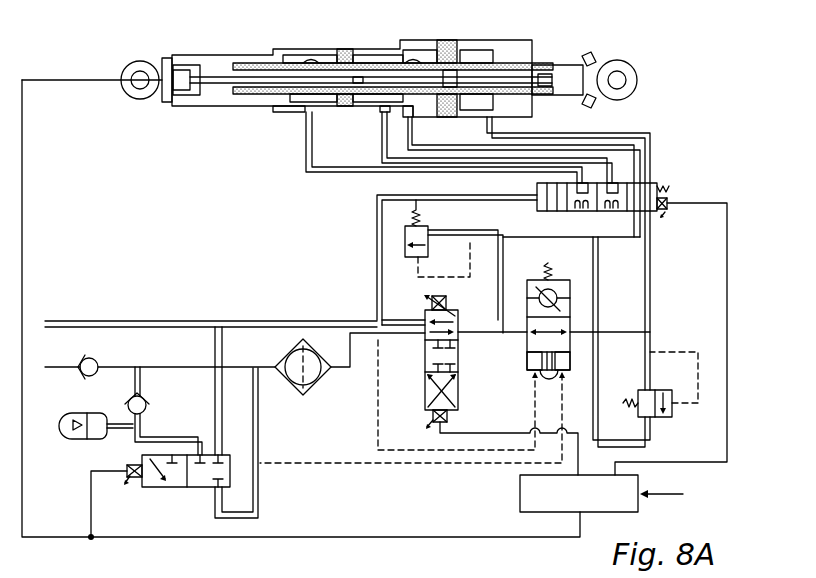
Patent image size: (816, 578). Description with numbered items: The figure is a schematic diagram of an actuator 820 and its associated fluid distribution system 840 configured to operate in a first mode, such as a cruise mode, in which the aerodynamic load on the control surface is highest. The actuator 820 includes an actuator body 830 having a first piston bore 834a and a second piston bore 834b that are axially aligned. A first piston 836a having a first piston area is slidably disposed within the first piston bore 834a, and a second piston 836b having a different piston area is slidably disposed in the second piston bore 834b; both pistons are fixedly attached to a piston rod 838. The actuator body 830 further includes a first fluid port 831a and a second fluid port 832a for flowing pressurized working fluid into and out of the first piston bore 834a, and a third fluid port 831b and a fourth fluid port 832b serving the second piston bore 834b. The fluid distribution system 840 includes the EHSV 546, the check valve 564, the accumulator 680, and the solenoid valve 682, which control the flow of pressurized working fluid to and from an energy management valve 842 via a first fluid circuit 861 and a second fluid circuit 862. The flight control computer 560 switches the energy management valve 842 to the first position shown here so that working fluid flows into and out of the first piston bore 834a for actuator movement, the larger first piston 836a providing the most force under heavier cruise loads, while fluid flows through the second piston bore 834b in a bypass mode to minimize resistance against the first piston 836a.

The actuator body 830 is at (520, 40).
The piston rod 838 is at (560, 66).
The actuator 820 is at (446, 45).
The first piston bore 834a is at (412, 55).
The second piston bore 834b is at (308, 58).
The first piston 836a is at (455, 42).
The second piston 836b is at (348, 50).
The first fluid port 831a is at (490, 118).
The third fluid port 831b is at (382, 107).
The second fluid port 832a is at (411, 115).
The fourth fluid port 832b is at (305, 112).
The energy management valve 842 is at (630, 184).
The fluid distribution system 840 is at (216, 258).
The second fluid circuit 862 is at (504, 252).
The first fluid circuit 861 is at (488, 338).
The check valve 564 is at (572, 353).
The EHSV 546 is at (425, 358).
The accumulator 680 is at (75, 441).
The solenoid valve 682 is at (175, 489).
The flight control computer 560 is at (519, 487).